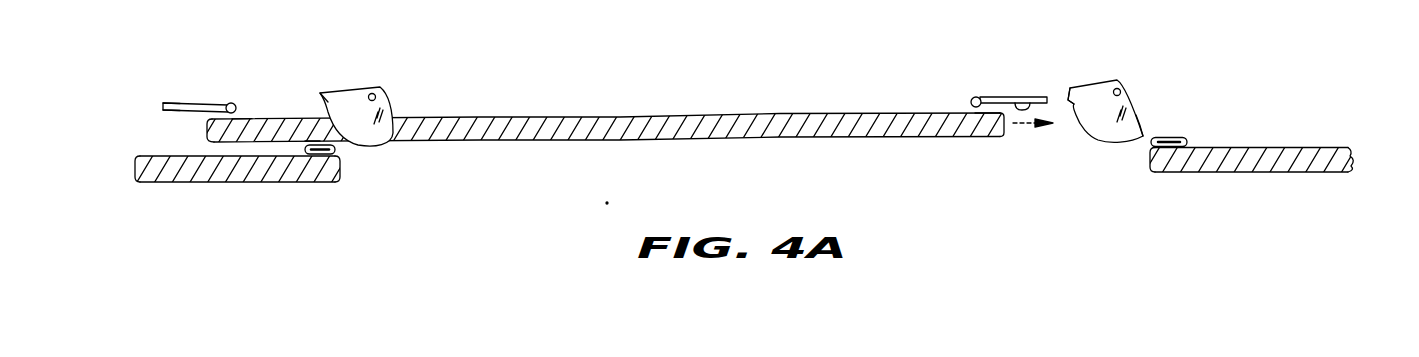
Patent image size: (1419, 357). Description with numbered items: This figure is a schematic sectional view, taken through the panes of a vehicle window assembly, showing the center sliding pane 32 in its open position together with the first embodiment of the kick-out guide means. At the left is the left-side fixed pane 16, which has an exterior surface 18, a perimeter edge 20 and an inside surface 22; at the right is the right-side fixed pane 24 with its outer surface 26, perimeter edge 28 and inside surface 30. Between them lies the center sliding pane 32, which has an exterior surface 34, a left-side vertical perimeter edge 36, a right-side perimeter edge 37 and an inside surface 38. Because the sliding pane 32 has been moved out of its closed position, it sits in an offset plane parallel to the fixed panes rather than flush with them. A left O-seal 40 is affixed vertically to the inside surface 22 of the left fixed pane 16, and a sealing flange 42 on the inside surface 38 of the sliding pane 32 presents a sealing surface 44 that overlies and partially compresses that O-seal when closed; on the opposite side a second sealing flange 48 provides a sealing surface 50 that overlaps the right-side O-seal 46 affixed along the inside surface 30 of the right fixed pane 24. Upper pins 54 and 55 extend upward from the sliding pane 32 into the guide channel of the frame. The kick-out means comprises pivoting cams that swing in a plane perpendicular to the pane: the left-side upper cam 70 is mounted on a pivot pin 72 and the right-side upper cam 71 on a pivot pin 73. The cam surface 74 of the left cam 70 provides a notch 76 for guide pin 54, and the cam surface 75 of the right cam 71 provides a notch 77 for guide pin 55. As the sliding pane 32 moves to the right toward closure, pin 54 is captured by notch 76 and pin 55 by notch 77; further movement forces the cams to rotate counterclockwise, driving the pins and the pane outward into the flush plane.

The left-side fixed pane 16 is at (135, 168).
The exterior surface 18 is at (192, 182).
The perimeter edge 20 is at (338, 181).
The inside surface 22 is at (147, 156).
The right-side fixed pane 24 is at (1353, 154).
The outer surface 26 is at (1242, 172).
The perimeter edge 28 is at (1150, 158).
The inside surface 30 is at (1263, 147).
The center sliding pane 32 is at (643, 122).
The exterior surface 34 is at (605, 141).
The left-side vertical perimeter edge 36 is at (207, 126).
The right-side perimeter edge 37 is at (1003, 133).
The inside surface 38 is at (513, 117).
The left O-seal 40 is at (313, 141).
The sealing flange 42 is at (240, 114).
The sealing surface 44 is at (163, 110).
The right-side O-seal 46 is at (1173, 138).
The sealing flange 48 is at (980, 97).
The sealing surface 50 is at (1018, 103).
The upper pin 54 is at (226, 104).
The upper pin 55 is at (973, 105).
The left-side upper cam 70 is at (390, 145).
The right-side upper cam 71 is at (1140, 106).
The pivot pin 72 is at (376, 97).
The pivot pin 73 is at (1117, 90).
The cam surface 74 is at (345, 150).
The cam surface 75 is at (1083, 132).
The notch 76 is at (325, 99).
The notch 77 is at (1066, 100).